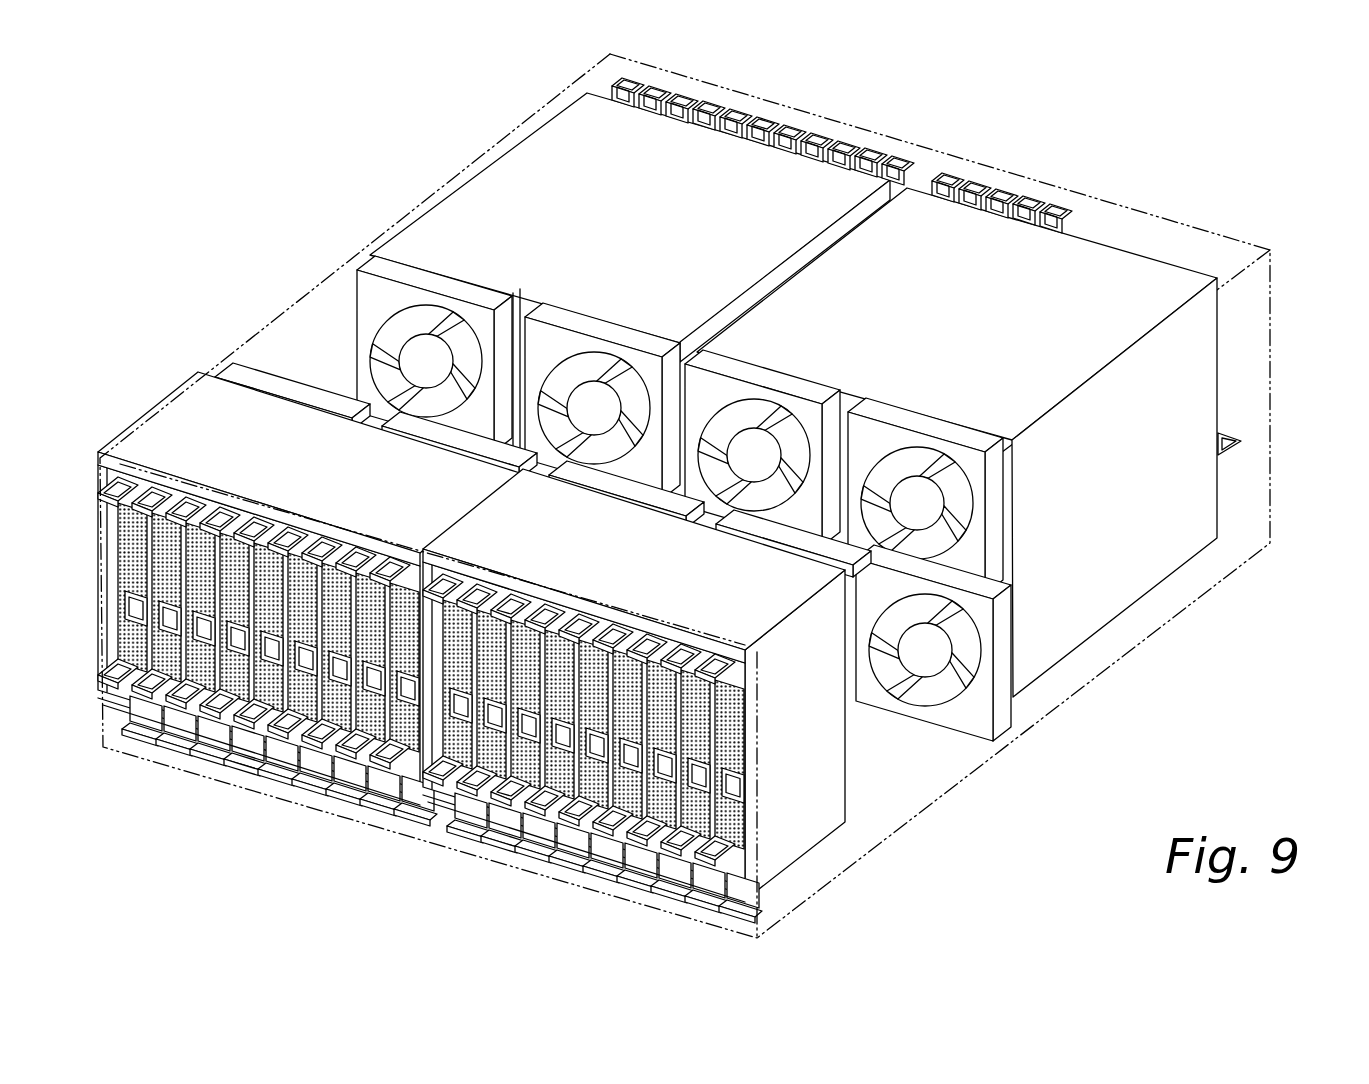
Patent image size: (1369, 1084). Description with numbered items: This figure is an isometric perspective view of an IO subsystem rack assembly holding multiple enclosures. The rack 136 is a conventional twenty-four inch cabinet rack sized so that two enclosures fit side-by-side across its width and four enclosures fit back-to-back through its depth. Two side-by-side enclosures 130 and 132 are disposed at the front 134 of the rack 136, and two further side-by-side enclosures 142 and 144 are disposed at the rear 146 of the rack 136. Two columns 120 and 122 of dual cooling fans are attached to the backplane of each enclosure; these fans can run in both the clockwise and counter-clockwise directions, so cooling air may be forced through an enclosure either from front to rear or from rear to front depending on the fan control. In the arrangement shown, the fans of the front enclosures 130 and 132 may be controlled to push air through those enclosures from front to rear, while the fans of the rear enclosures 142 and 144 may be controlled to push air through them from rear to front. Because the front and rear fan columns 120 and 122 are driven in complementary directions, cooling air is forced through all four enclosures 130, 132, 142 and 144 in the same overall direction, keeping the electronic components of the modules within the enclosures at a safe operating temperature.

The column of dual cooling fans 120 is at (453, 288).
The column of dual cooling fans 122 is at (620, 328).
The enclosure 130 is at (348, 483).
The enclosure 132 is at (664, 583).
The front of the rack 134 is at (352, 812).
The rack 136 is at (343, 262).
The enclosure 142 is at (665, 220).
The enclosure 144 is at (982, 327).
The rear of the rack 146 is at (1268, 328).